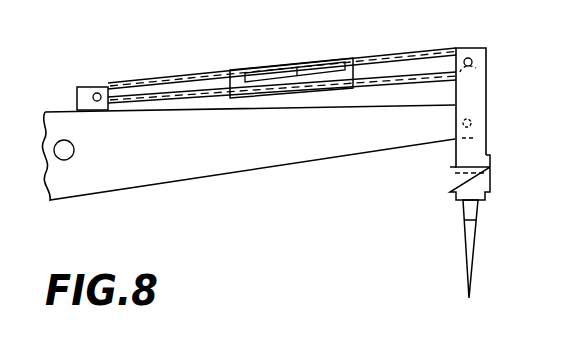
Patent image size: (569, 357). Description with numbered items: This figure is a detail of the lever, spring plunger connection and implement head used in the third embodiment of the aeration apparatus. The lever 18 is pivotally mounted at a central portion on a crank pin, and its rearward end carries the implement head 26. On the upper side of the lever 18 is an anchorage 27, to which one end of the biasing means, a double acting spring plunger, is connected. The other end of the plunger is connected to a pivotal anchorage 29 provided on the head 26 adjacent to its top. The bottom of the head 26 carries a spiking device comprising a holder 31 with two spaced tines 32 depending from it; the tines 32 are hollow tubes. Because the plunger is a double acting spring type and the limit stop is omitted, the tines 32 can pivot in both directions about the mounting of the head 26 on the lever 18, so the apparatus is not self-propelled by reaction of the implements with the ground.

The lever 18 is at (230, 168).
The implement head 26 is at (270, 68).
The anchorage 27 is at (90, 95).
The pivotal anchorage 29 is at (476, 60).
The holder 31 is at (450, 190).
The tines 32 is at (462, 244).